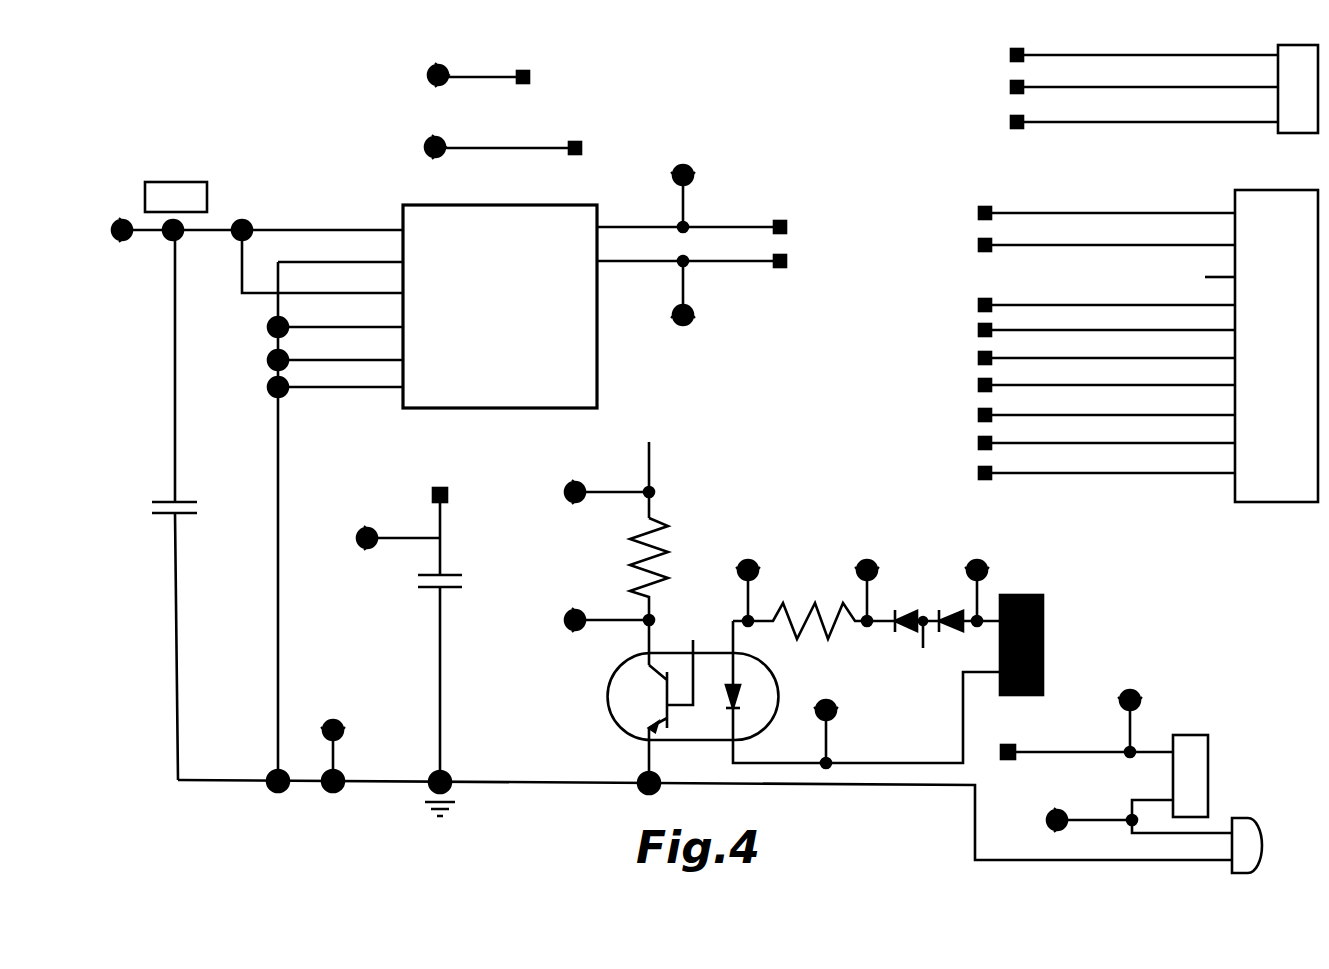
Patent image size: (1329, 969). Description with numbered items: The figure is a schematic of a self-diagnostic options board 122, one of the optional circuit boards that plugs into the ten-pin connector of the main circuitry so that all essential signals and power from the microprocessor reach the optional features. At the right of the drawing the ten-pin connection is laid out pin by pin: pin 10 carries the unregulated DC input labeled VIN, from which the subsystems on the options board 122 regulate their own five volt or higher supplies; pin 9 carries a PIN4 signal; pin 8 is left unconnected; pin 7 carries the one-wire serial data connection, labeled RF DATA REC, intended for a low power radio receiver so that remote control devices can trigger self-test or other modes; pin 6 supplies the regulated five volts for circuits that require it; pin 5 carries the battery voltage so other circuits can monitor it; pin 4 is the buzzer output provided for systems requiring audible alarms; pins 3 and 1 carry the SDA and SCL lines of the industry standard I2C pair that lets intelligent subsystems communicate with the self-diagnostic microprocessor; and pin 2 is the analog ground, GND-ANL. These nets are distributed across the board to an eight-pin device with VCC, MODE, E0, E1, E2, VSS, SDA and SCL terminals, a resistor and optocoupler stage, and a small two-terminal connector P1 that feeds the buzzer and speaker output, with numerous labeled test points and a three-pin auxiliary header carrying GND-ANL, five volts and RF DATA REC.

The options board 122 is at (710, 448).
The connector pin 1 (SCL) 1 is at (1107, 464).
The connector pin 2 (GND-ANL) 2 is at (1107, 434).
The connector pin 3 (SDA) 3 is at (1107, 406).
The connector pin 4 (BUZZER) 4 is at (1107, 376).
The connector pin 5 (V BAT) 5 is at (1107, 349).
The connector pin 6 (+5V) 6 is at (1107, 321).
The connector pin 7 (RF DATA REC) 7 is at (1107, 296).
The connector pin 8 is at (1220, 265).
The connector pin 9 (PIN4) 9 is at (1107, 236).
The connector pin 10 (VIN) 10 is at (1107, 204).
The connector P1 is at (1021, 630).